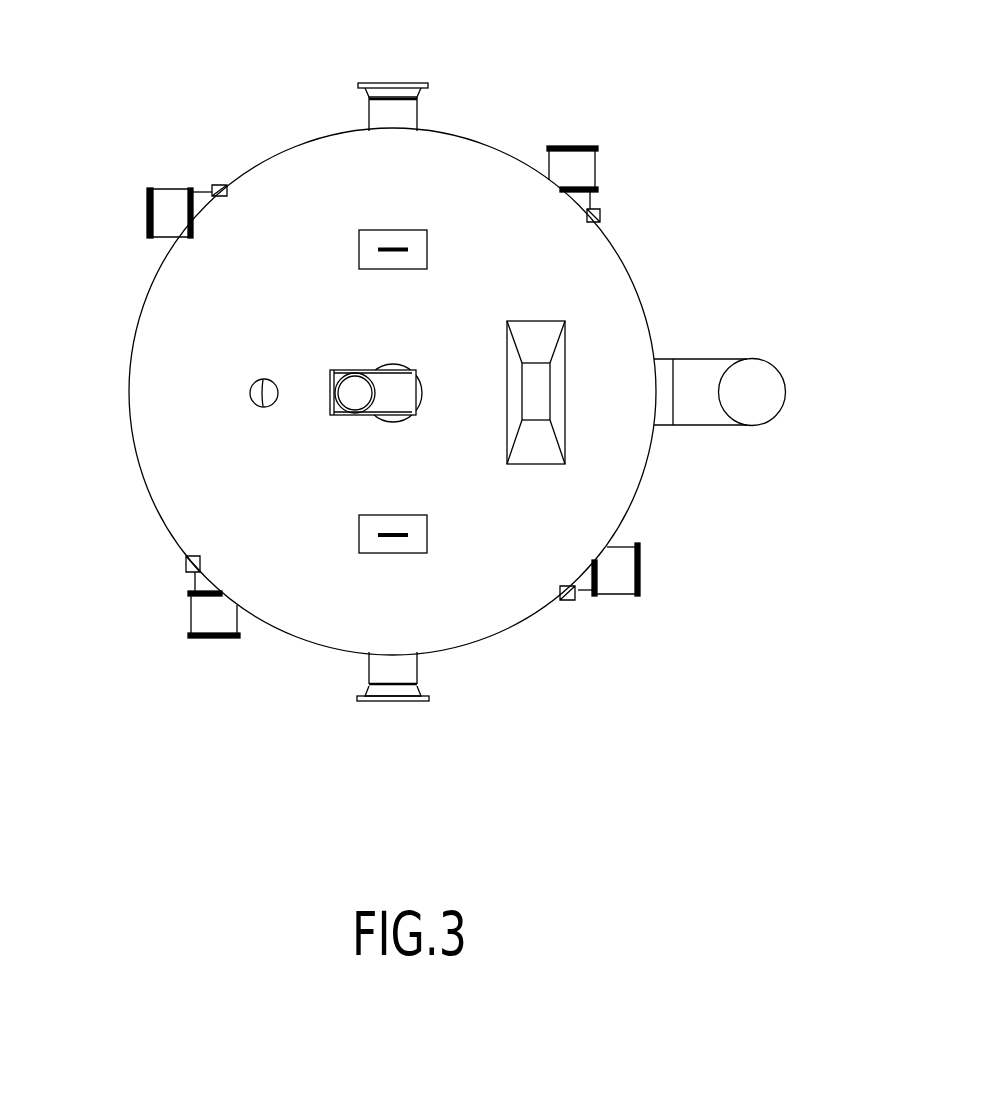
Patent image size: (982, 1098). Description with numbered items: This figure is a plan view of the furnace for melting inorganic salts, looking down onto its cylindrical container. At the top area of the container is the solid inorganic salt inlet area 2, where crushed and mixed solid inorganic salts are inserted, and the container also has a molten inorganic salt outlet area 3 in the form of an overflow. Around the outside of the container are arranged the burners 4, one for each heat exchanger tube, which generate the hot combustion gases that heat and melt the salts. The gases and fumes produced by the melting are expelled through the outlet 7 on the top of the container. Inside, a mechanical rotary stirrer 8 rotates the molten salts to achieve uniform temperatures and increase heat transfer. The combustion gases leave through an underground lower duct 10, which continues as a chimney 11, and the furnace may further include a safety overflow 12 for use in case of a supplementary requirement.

The solid inorganic salt inlet area 2 is at (557, 417).
The molten inorganic salt outlet area 3 is at (397, 672).
The burners 4 is at (168, 211).
The outlet 7 is at (257, 378).
The mechanical rotary stirrer 8 is at (355, 392).
The lower duct 10 is at (692, 372).
The chimney 11 is at (762, 380).
The safety overflow 12 is at (402, 115).